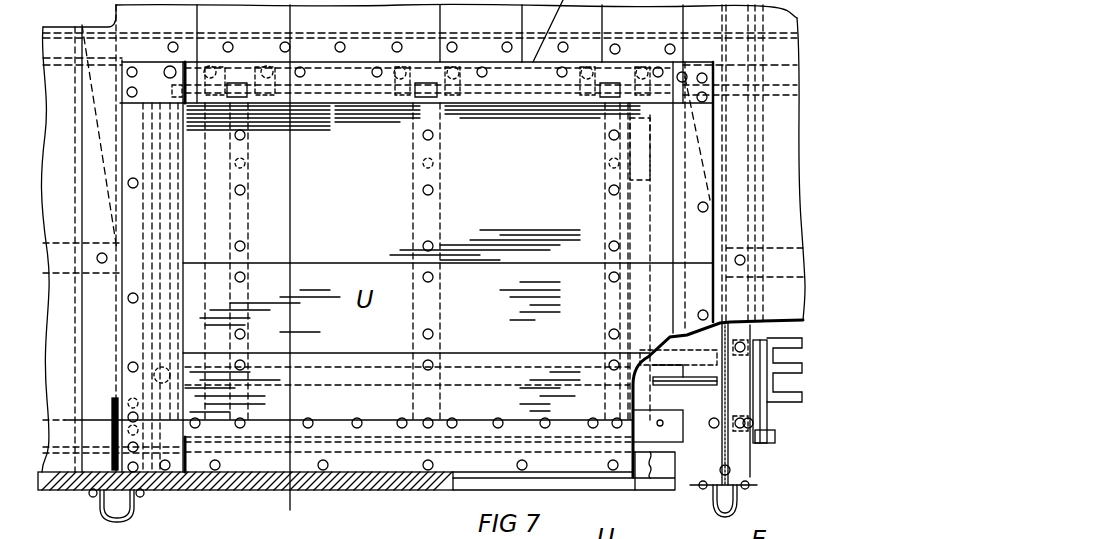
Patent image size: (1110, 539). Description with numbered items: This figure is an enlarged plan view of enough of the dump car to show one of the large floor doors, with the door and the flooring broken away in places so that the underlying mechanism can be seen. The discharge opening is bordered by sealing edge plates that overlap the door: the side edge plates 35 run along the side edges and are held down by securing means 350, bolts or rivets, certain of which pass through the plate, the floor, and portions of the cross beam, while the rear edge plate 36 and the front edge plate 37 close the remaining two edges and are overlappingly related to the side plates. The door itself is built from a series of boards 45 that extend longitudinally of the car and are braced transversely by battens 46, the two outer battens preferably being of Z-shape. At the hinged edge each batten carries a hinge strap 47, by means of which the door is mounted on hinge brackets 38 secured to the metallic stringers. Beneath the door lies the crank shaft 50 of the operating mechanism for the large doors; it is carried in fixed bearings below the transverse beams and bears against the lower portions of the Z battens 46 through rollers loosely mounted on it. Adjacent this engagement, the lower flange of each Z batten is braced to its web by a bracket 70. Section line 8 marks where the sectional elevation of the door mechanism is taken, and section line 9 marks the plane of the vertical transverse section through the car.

The side edge plate 35 is at (683, 233).
The rear edge plate 36 is at (320, 438).
The front edge plate 37 is at (338, 100).
The hinge bracket 38 is at (600, 88).
The board 45 is at (413, 183).
The batten 46 is at (605, 300).
The hinge strap 47 is at (608, 192).
The crank shaft 50 is at (667, 377).
The bracket 70 is at (650, 393).
The securing means 350 is at (708, 314).
The section line 8— 8 is at (67, 390).
The section line 9— 9 is at (312, 510).